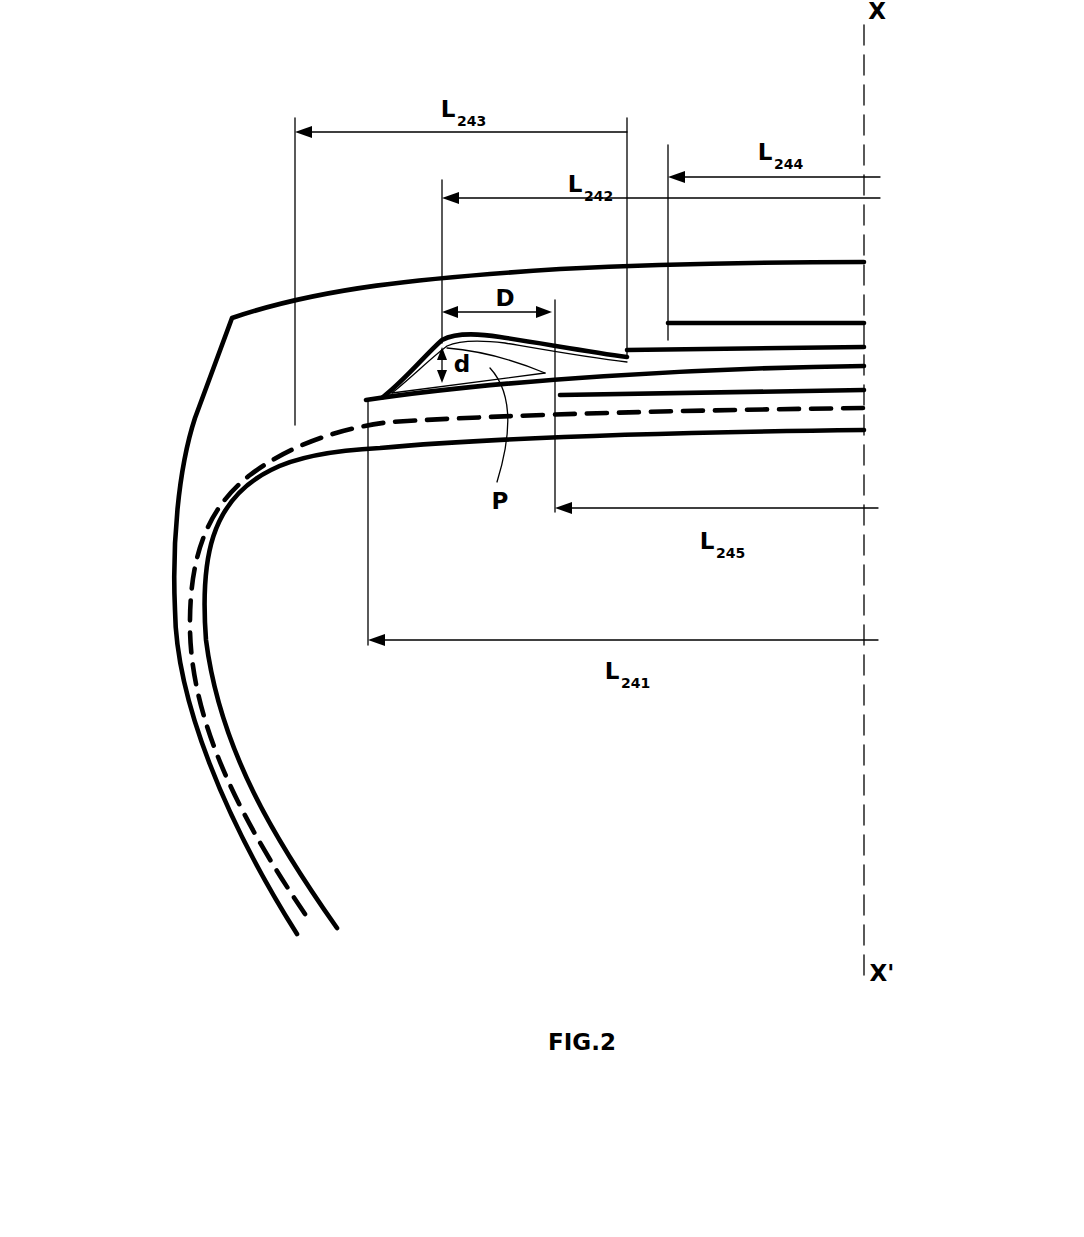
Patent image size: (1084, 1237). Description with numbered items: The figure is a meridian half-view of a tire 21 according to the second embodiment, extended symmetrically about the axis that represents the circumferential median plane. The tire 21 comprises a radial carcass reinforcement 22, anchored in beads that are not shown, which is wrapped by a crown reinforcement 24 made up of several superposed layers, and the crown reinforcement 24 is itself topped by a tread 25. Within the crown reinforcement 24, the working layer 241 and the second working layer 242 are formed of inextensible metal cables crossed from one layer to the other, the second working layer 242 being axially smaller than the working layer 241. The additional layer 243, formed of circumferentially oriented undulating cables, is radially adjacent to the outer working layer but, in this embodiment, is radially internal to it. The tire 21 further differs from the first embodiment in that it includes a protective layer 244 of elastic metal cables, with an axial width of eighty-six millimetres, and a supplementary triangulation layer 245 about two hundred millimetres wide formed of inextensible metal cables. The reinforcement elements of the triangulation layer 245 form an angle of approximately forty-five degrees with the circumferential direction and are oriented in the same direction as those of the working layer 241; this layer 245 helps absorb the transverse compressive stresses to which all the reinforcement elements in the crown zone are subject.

The tire 21 is at (138, 284).
The carcass reinforcement 22 is at (202, 543).
The crown reinforcement 24 is at (882, 360).
The tread 25 is at (764, 283).
The working layer 241 is at (830, 372).
The second working layer 242 is at (806, 347).
The additional layer 243 is at (407, 388).
The protective layer 244 is at (677, 322).
The triangulation layer 245 is at (577, 403).